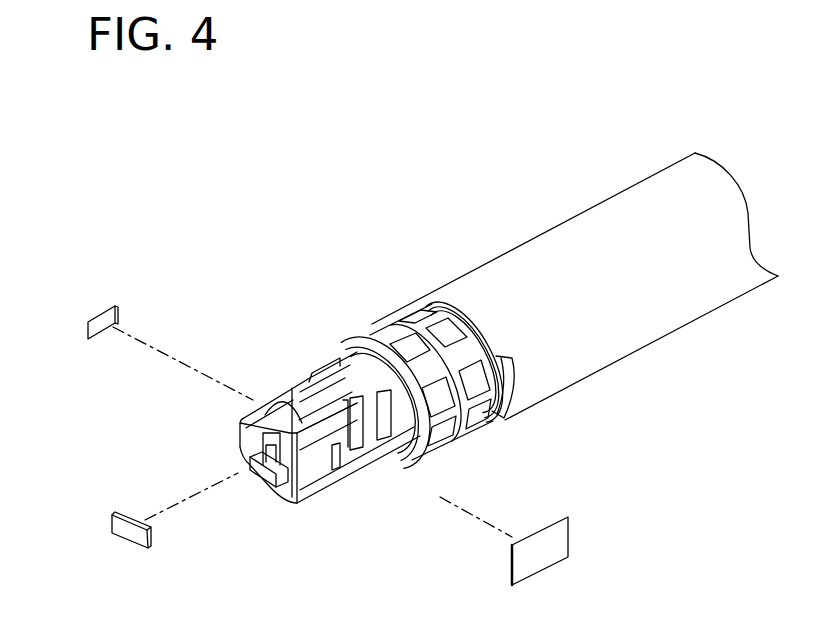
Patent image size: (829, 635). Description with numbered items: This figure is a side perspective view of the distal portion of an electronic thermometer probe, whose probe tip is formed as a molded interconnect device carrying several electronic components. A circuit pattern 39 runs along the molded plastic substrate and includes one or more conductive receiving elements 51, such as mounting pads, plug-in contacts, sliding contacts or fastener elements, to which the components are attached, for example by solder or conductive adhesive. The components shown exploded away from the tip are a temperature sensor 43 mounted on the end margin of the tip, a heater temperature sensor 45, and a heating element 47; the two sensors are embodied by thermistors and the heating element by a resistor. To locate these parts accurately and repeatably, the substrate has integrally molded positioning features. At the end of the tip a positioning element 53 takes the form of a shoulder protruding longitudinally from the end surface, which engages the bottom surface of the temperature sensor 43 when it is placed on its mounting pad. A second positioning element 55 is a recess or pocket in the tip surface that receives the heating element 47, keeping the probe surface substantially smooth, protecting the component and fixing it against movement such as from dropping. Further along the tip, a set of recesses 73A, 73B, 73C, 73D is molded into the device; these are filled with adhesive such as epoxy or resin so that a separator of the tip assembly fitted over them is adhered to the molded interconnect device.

The circuit pattern 39 is at (272, 392).
The temperature sensor 43 is at (129, 531).
The heater temperature sensor 45 is at (93, 336).
The heating element 47 is at (527, 575).
The conductive receiving element 51 is at (263, 470).
The positioning element 53 is at (286, 497).
The positioning element 55 is at (334, 443).
The recess 73A is at (410, 338).
The recess 73B is at (458, 320).
The recess 73C is at (510, 420).
The recess 73D is at (500, 371).